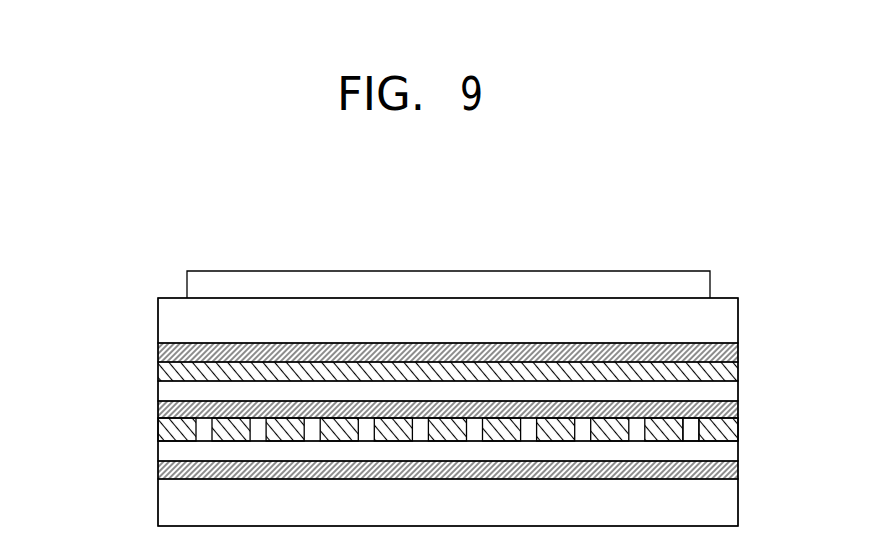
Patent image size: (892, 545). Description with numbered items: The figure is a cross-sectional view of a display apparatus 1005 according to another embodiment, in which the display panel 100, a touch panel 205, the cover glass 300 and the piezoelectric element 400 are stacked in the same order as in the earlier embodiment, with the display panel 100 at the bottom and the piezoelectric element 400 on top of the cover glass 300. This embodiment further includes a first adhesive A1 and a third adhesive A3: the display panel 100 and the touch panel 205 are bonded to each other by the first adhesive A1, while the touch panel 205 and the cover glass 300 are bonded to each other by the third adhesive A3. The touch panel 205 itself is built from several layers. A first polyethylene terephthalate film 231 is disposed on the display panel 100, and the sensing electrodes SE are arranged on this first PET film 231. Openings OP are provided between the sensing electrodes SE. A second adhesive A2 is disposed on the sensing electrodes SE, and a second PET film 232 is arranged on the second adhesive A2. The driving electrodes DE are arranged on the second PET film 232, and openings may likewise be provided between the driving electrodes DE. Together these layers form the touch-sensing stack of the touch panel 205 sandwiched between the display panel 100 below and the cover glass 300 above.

The display apparatus 1005 is at (672, 214).
The piezoelectric element 400 is at (198, 286).
The cover glass 300 is at (168, 323).
The third adhesive A3 is at (738, 350).
The touch panel 205 is at (72, 355).
The driving electrodes DE is at (168, 368).
The second polyethylene terephthalate (PET) film 232 is at (168, 391).
The second adhesive A2 is at (168, 412).
The sensing electrodes SE is at (168, 434).
The openings OP is at (700, 423).
The first polyethylene terephthalate (PET) film 231 is at (168, 450).
The first adhesive A1 is at (738, 468).
The display panel 100 is at (168, 501).